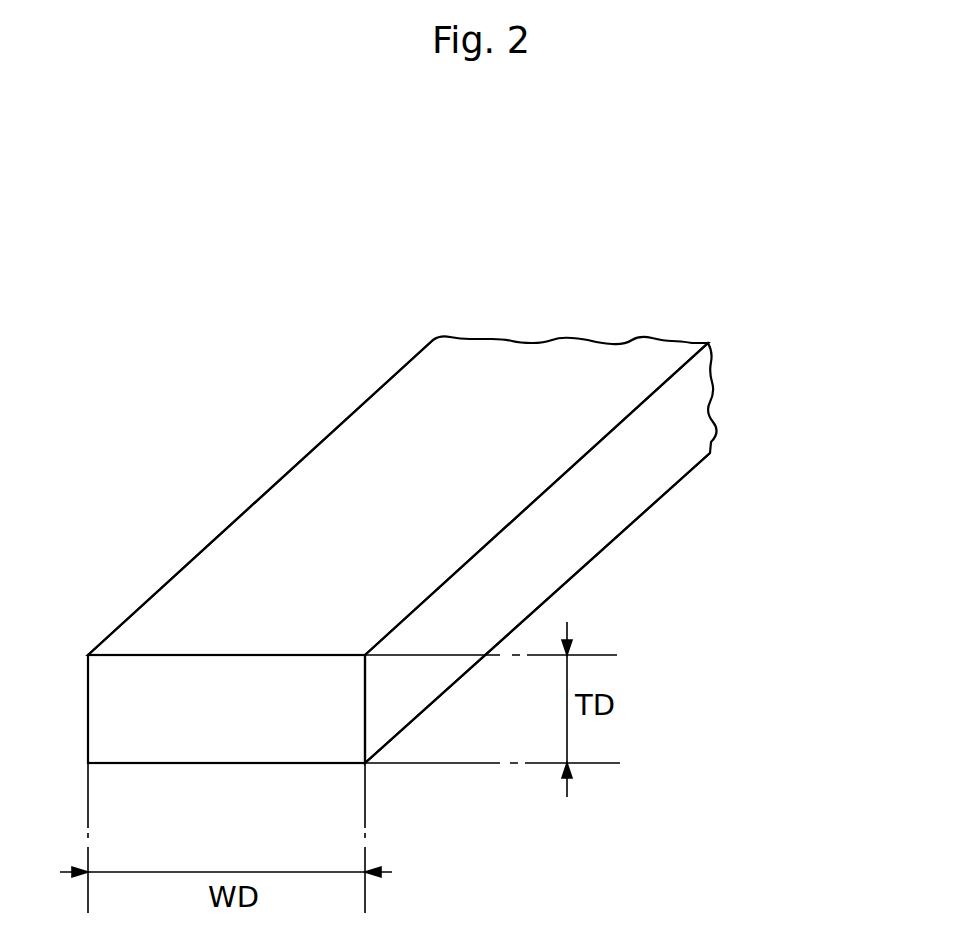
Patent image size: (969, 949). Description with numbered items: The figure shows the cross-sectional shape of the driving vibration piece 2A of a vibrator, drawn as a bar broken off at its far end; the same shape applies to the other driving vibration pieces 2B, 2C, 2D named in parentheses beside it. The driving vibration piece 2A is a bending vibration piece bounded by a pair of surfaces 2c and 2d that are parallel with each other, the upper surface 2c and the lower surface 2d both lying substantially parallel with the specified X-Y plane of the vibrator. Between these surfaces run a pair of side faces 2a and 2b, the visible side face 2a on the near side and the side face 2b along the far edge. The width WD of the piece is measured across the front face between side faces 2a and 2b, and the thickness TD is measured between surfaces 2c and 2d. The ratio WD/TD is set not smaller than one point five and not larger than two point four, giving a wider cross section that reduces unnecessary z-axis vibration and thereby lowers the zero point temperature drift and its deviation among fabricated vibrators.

The driving vibration piece 2A is at (642, 533).
The elastic member 2B is at (473, 592).
The elastic member 2C is at (473, 592).
The elastic member 2D is at (473, 592).
The side face 2a is at (557, 577).
The side face 2b is at (173, 575).
The surface 2c is at (387, 433).
The surface 2d is at (255, 764).